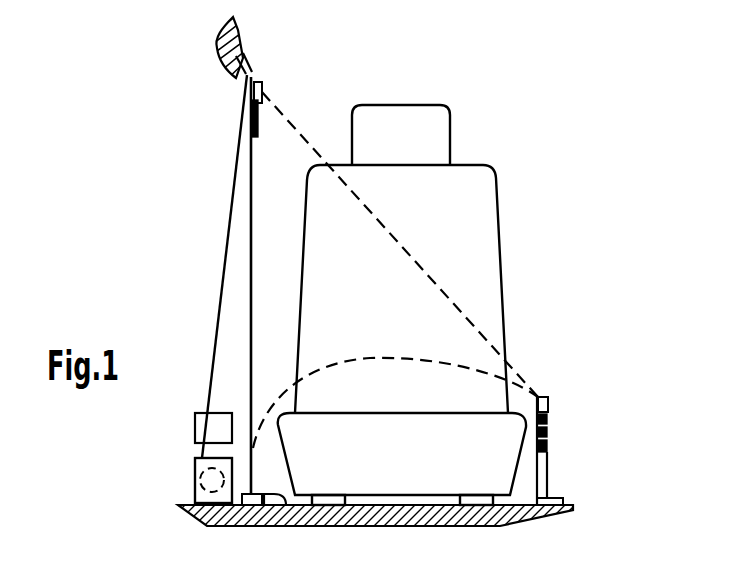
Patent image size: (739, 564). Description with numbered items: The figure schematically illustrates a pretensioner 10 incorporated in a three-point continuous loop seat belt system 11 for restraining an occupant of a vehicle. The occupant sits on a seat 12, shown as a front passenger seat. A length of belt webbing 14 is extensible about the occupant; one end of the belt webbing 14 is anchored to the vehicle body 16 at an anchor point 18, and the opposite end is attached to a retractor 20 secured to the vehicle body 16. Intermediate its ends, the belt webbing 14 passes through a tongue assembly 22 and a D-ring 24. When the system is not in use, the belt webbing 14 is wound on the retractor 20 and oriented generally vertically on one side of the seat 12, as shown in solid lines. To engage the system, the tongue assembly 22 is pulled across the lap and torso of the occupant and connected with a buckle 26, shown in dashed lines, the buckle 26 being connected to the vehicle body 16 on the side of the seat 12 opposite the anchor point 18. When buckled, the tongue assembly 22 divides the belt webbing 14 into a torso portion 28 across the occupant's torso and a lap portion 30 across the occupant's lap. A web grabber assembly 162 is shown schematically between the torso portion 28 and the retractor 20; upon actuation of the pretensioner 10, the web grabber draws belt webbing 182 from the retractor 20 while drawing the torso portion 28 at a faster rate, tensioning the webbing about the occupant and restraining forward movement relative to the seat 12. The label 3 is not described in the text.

The section line 3- 3 is at (307, 563).
The pretensioner 10 is at (197, 488).
The seat belt system 11 is at (190, 181).
The seat 12 is at (473, 178).
The belt webbing 14 is at (218, 286).
The vehicle body 16 is at (207, 526).
The anchor point 18 is at (270, 520).
The retractor 20 is at (197, 467).
The tongue assembly 22 is at (262, 88).
The D-ring 24 is at (240, 58).
The buckle 26 is at (547, 455).
The torso portion 28 is at (445, 281).
The lap portion 30 is at (420, 358).
The web grabber assembly 162 is at (203, 413).
The belt webbing 182 is at (197, 448).